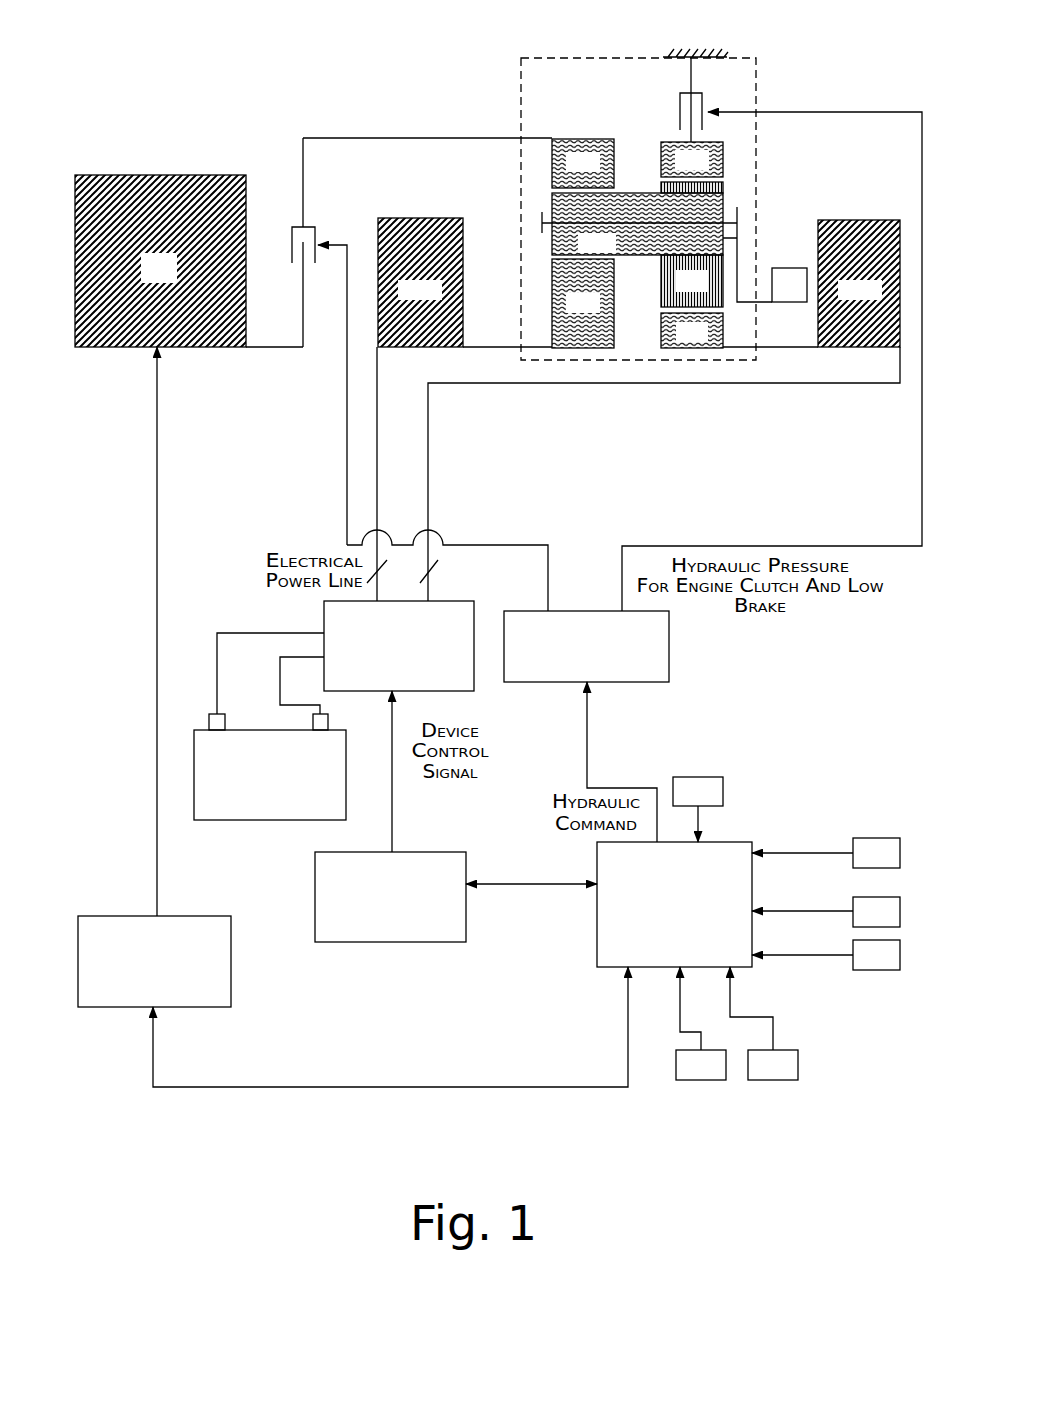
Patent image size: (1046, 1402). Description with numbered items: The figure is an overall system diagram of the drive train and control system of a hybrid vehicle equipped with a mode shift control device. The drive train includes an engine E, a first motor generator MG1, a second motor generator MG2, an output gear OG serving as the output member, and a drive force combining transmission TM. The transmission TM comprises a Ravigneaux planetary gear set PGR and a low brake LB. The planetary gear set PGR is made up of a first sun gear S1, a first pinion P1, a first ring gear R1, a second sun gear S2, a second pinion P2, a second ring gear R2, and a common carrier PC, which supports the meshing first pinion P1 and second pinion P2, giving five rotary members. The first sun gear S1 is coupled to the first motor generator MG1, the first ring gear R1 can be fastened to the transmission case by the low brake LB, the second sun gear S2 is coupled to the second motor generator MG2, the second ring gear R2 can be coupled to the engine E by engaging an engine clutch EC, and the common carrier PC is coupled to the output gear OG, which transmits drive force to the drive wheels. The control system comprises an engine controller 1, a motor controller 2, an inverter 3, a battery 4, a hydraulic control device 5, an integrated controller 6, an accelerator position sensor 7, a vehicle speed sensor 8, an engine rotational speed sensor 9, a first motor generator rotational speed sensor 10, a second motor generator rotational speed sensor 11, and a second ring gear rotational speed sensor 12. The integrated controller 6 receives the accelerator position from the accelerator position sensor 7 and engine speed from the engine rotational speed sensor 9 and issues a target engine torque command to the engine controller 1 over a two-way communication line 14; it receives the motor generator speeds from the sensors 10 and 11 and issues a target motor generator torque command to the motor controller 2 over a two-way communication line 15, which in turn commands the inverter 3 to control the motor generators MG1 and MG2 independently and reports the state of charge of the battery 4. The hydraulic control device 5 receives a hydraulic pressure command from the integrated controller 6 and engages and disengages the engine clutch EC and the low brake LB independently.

The engine controller 1 is at (197, 914).
The motor controller 2 is at (458, 851).
The inverter 3 is at (472, 601).
The battery 4 is at (265, 728).
The hydraulic control device 5 is at (669, 638).
The integrated controller 6 is at (726, 842).
The accelerator position sensor 7 is at (892, 838).
The vehicle speed sensor 8 is at (904, 898).
The engine rotational speed sensor 9 is at (878, 970).
The first motor generator rotational speed sensor 10 is at (703, 1080).
The second motor generator rotational speed sensor 11 is at (773, 1080).
The second ring gear rotational speed sensor 12 is at (703, 775).
The two-way communication line 14 is at (248, 1086).
The two-way communication line 15 is at (535, 883).
The engine E is at (160, 261).
The engine clutch EC is at (298, 227).
The first motor generator MG1 is at (664, 410).
The second motor generator MG2 is at (464, 409).
The drive force combining transmission TM is at (762, 86).
The Ravigneaux planetary gear set PGR is at (639, 216).
The low brake LB is at (680, 112).
The common carrier PC is at (737, 208).
The output gear OG is at (789, 285).
The first ring gear R1 is at (692, 159).
The second ring gear R2 is at (583, 163).
The first pinion P1 is at (692, 281).
The second pinion P2 is at (639, 224).
The first sun gear S1 is at (692, 330).
The second sun gear S2 is at (583, 303).